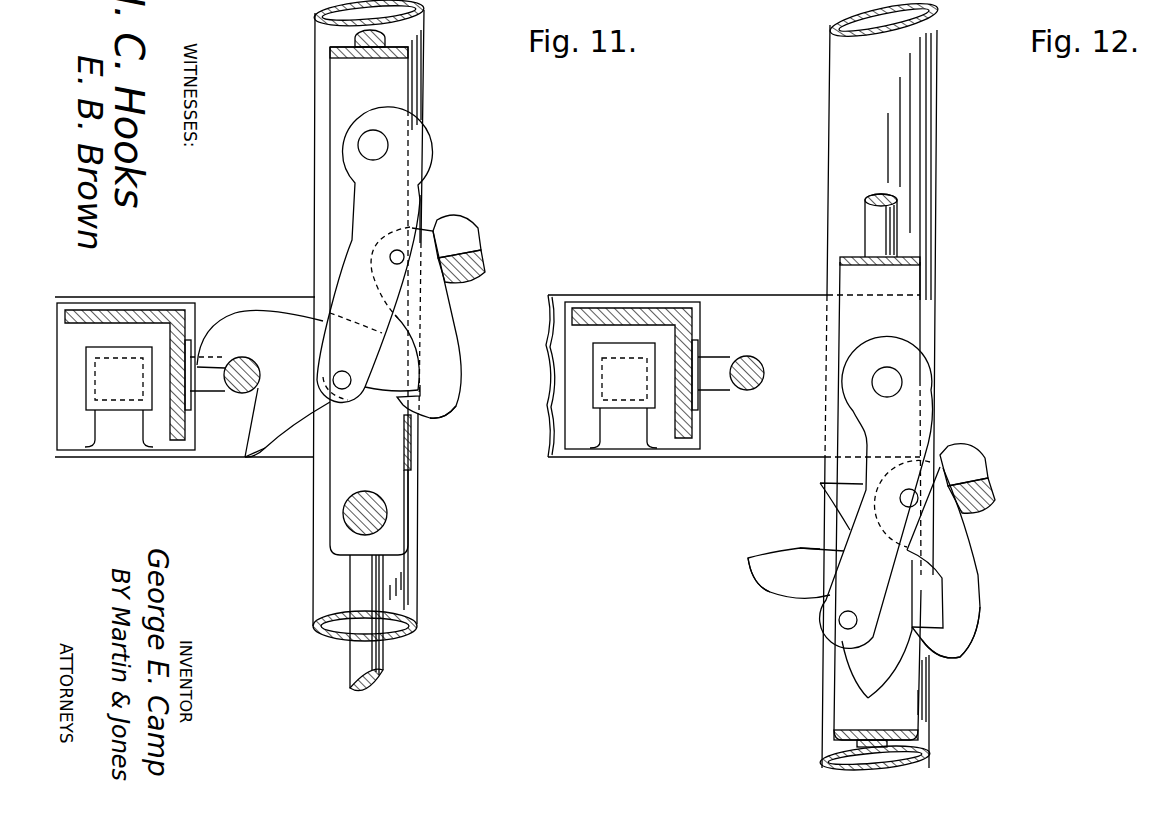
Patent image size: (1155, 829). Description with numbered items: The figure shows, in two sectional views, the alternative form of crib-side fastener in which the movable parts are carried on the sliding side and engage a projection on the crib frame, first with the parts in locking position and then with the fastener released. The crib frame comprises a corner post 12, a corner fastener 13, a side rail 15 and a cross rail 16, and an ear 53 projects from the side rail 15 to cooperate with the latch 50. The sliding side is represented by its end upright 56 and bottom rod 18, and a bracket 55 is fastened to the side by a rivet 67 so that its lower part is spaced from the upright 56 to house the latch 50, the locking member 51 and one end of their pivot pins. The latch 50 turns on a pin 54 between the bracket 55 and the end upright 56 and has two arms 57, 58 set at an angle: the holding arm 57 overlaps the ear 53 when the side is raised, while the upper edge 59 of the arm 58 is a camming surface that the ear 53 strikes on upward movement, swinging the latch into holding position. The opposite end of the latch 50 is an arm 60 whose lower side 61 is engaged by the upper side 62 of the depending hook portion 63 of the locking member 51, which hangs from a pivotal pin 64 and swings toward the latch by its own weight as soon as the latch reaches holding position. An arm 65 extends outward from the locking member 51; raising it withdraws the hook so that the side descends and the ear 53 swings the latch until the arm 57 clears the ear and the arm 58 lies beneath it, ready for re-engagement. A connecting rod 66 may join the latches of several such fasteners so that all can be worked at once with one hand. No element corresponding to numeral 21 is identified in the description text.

In FIG. 11, the corner post 12 is at (426, 35).
In FIG. 12, the corner post 12 is at (786, 752).
In FIG. 11, the corner fastener 13 is at (412, 450).
In FIG. 11, the side rail 15 is at (112, 310).
In FIG. 12, the side rail 15 is at (630, 310).
In FIG. 11, the cross rail 16 is at (203, 300).
In FIG. 12, the cross rail 16 is at (733, 376).
In FIG. 11, the bottom rod 18 is at (343, 514).
In FIG. 11, the pin 21 is at (355, 42).
In FIG. 12, the pin 21 is at (890, 210).
In FIG. 11, the latch 50 is at (303, 364).
In FIG. 12, the latch 50 is at (818, 552).
In FIG. 11, the locking member 51 is at (440, 319).
In FIG. 12, the locking member 51 is at (956, 531).
In FIG. 11, the ear 53 is at (246, 357).
In FIG. 12, the ear 53 is at (751, 358).
In FIG. 11, the pin 54 is at (345, 371).
In FIG. 12, the pin 54 is at (840, 622).
In FIG. 11, the bracket 55 is at (391, 255).
In FIG. 12, the bracket 55 is at (874, 493).
In FIG. 11, the end upright 56 is at (369, 301).
In FIG. 12, the end upright 56 is at (877, 502).
In FIG. 11, the holding arm 57 is at (260, 337).
In FIG. 12, the holding arm 57 is at (845, 503).
In FIG. 11, the arm 58 is at (263, 422).
In FIG. 12, the arm 58 is at (773, 575).
In FIG. 11, the camming surface 59 is at (247, 423).
In FIG. 12, the camming surface 59 is at (798, 547).
In FIG. 11, the arm 60 is at (385, 372).
In FIG. 12, the arm 60 is at (847, 629).
In FIG. 11, the lower side 61 is at (382, 389).
In FIG. 12, the lower side 61 is at (858, 675).
In FIG. 11, the upper side 62 is at (400, 404).
In FIG. 12, the upper side 62 is at (928, 627).
In FIG. 11, the hook portion 63 is at (432, 404).
In FIG. 12, the hook portion 63 is at (951, 632).
In FIG. 11, the pivotal pin 64 is at (402, 252).
In FIG. 12, the pivotal pin 64 is at (913, 490).
In FIG. 11, the arm 65 is at (463, 233).
In FIG. 12, the arm 65 is at (970, 460).
In FIG. 11, the connecting rod 66 is at (486, 263).
In FIG. 12, the connecting rod 66 is at (994, 490).
In FIG. 11, the rivet 67 is at (388, 143).
In FIG. 12, the rivet 67 is at (893, 378).